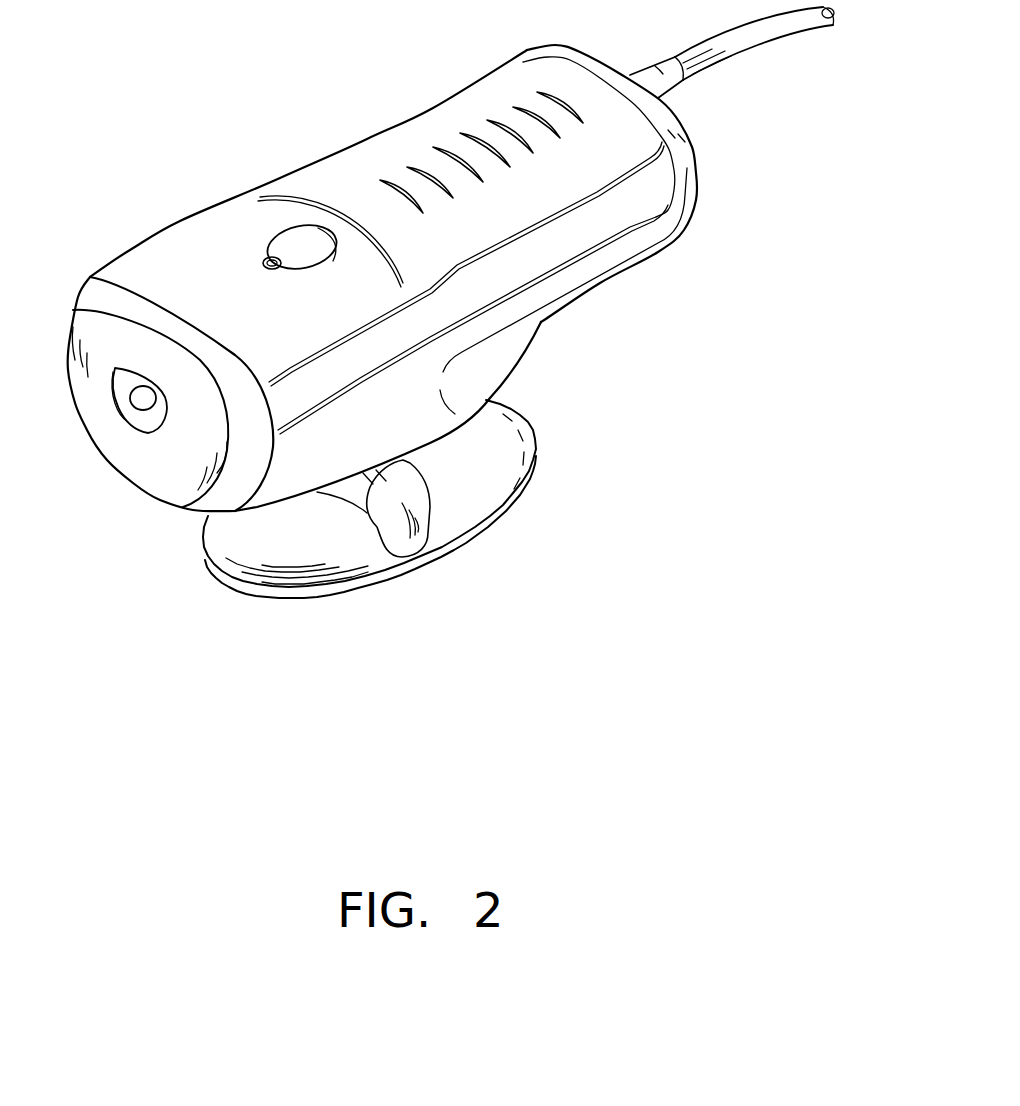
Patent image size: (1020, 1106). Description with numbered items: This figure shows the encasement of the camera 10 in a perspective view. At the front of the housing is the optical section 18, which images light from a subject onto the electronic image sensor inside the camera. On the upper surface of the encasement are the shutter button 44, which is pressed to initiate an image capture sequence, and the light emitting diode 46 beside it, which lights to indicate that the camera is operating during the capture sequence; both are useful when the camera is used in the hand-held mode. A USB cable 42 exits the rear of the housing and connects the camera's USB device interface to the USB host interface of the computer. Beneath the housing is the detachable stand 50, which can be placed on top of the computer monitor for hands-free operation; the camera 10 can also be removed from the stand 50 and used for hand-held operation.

The camera 10 is at (433, 118).
The optical section 18 is at (133, 413).
The USB cable 42 is at (737, 50).
The shutter button 44 is at (305, 232).
The light emitting diode (LED) 46 is at (266, 262).
The detachable stand 50 is at (538, 448).